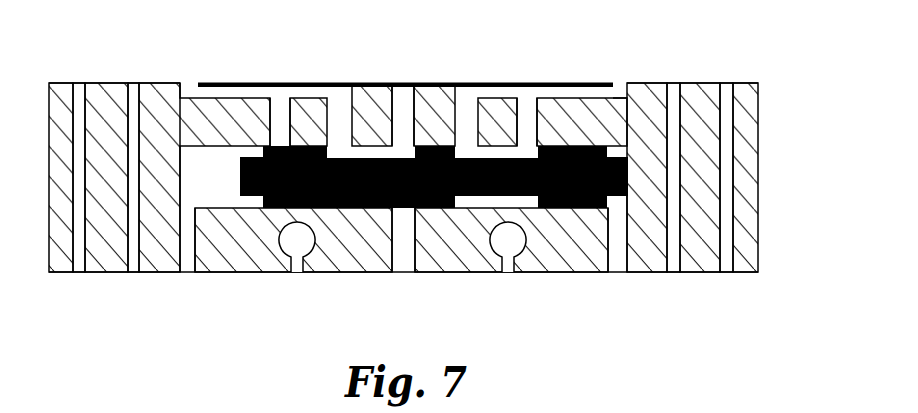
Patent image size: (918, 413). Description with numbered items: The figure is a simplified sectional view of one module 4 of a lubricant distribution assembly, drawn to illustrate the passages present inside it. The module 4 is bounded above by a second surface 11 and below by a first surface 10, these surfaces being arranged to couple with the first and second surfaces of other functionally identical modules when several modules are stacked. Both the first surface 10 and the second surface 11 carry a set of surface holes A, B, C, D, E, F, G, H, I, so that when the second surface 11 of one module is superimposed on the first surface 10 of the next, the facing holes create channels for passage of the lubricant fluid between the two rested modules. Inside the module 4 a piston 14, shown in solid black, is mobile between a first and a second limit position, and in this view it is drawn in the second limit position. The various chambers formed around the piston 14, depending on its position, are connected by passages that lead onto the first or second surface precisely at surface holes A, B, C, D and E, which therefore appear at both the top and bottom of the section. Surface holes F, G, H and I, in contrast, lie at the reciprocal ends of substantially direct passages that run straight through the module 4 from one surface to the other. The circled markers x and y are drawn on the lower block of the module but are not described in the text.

The module 4 is at (439, 175).
The first surface 10 is at (401, 274).
The second surface 11 is at (436, 84).
The piston 14 is at (368, 158).
The surface hole A is at (188, 86).
The surface hole B is at (276, 84).
The surface hole C is at (404, 92).
The surface hole D is at (524, 92).
The surface hole E is at (621, 86).
The surface hole F is at (80, 86).
The surface hole G is at (134, 86).
The surface hole H is at (675, 86).
The surface hole I is at (727, 86).
The position marker x is at (297, 247).
The position marker y is at (508, 247).